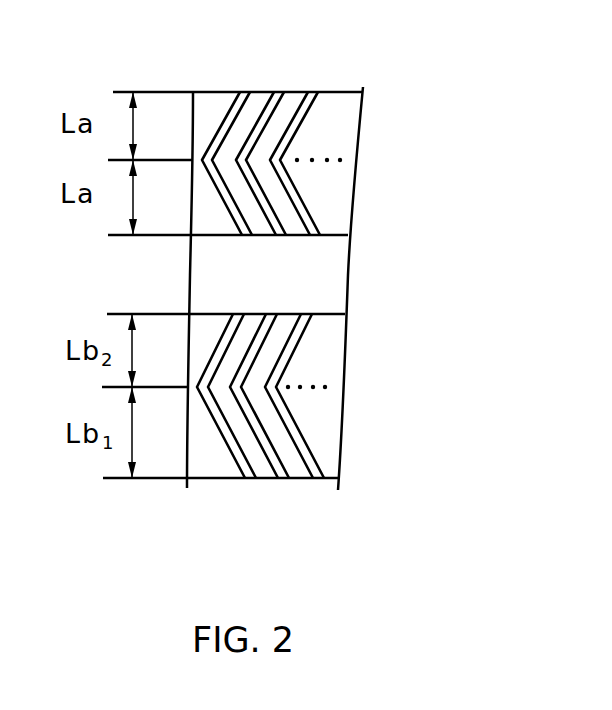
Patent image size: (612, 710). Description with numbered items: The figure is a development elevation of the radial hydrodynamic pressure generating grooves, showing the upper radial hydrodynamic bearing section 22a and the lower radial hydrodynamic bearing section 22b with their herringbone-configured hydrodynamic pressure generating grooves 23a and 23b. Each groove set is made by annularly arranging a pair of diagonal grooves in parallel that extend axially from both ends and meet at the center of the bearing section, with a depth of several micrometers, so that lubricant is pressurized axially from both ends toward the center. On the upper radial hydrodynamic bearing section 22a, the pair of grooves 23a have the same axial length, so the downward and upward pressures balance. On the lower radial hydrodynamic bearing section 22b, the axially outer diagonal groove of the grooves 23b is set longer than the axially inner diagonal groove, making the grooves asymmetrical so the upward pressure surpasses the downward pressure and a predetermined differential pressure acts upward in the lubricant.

The upper radial hydrodynamic bearing section 22a is at (352, 128).
The hydrodynamic pressure generating grooves 23a is at (300, 131).
The lower radial hydrodynamic bearing section 22b is at (320, 376).
The hydrodynamic pressure generating grooves 23b is at (262, 342).